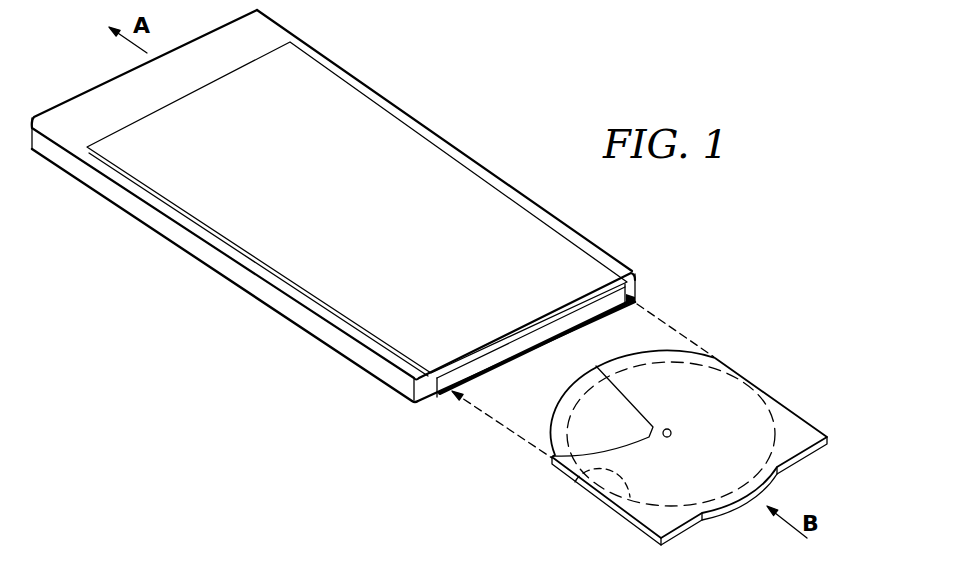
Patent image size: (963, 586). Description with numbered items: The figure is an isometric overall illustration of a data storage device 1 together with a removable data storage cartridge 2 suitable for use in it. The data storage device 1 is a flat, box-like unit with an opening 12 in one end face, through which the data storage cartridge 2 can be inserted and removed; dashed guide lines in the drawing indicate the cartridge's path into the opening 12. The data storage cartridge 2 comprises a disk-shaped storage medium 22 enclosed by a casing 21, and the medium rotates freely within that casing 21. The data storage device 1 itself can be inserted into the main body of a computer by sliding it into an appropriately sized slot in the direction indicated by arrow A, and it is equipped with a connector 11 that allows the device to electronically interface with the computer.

The data storage device 1 is at (333, 210).
The connector 11 is at (96, 84).
The opening 12 is at (518, 356).
The data storage cartridge 2 is at (680, 420).
The casing 21 is at (636, 523).
The disk-shaped storage medium 22 is at (575, 482).